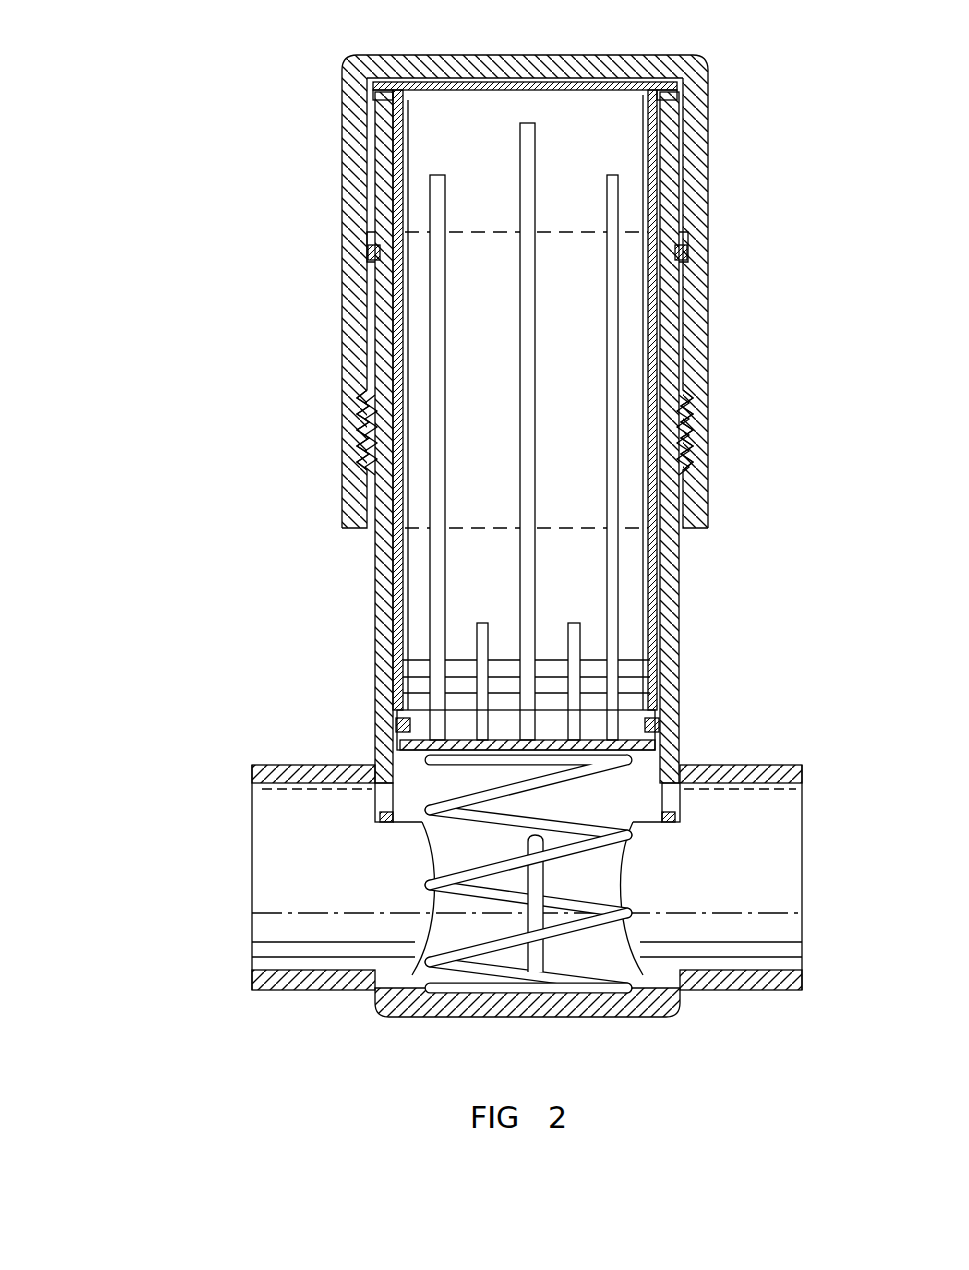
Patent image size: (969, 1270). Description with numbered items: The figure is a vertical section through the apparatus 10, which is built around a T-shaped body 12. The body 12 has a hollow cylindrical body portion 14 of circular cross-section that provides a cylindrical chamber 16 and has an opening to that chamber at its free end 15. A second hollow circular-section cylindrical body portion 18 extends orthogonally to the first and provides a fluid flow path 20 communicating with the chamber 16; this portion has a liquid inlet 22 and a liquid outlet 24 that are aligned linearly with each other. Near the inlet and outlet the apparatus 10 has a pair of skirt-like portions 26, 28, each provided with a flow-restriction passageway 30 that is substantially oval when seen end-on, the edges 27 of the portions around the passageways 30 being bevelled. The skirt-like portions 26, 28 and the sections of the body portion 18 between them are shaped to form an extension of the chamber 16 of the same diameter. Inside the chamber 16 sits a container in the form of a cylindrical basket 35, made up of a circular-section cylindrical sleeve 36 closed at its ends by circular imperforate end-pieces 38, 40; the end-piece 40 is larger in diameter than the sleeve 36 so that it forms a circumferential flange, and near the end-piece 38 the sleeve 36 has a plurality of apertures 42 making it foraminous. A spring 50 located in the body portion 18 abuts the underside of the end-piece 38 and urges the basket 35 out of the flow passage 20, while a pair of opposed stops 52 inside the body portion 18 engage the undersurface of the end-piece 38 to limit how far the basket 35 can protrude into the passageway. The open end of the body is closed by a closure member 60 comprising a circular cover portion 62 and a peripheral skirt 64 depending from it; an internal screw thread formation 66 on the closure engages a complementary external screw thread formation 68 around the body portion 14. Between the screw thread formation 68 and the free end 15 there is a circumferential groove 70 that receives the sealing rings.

The apparatus 10 is at (780, 55).
The T-shaped body 12 is at (525, 841).
The hollow cylindrical body portion 14 is at (525, 436).
The free end 15 is at (668, 300).
The cylindrical chamber 16 is at (405, 762).
The hollow circular-section cylindrical body portion 18 is at (650, 1014).
The fluid flow path 20 is at (300, 877).
The liquid inlet 22 is at (246, 805).
The liquid outlet 24 is at (812, 862).
The skirt-like portion 26 is at (390, 824).
The bevelled edges 27 is at (393, 784).
The skirt-like portion 28 is at (675, 824).
The flow-restriction passageway 30 is at (385, 800).
The cylindrical basket 35 is at (633, 572).
The cylindrical sleeve 36 is at (655, 548).
The end-piece 38 is at (660, 750).
The end-piece 40 is at (596, 82).
The apertures 42 is at (458, 700).
The spring 50 is at (539, 874).
The stops 52 is at (533, 912).
The closure member 60 is at (527, 265).
The circular cover portion 62 is at (500, 62).
The peripheral skirt 64 is at (352, 330).
The internal screw thread formation 66 is at (360, 435).
The external screw thread formation 68 is at (398, 438).
The circumferential groove 70 is at (386, 250).